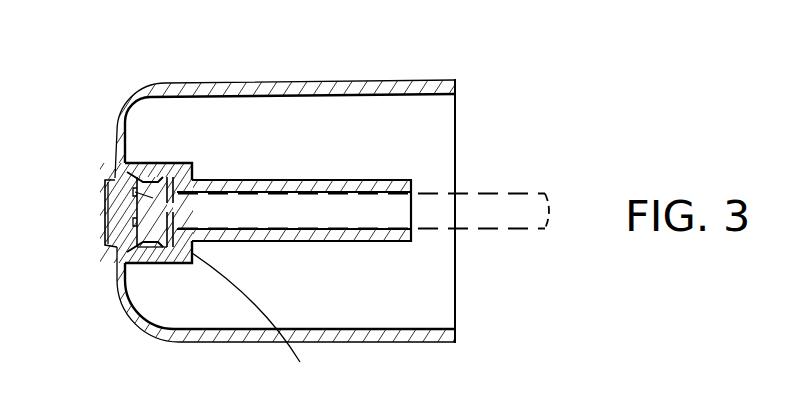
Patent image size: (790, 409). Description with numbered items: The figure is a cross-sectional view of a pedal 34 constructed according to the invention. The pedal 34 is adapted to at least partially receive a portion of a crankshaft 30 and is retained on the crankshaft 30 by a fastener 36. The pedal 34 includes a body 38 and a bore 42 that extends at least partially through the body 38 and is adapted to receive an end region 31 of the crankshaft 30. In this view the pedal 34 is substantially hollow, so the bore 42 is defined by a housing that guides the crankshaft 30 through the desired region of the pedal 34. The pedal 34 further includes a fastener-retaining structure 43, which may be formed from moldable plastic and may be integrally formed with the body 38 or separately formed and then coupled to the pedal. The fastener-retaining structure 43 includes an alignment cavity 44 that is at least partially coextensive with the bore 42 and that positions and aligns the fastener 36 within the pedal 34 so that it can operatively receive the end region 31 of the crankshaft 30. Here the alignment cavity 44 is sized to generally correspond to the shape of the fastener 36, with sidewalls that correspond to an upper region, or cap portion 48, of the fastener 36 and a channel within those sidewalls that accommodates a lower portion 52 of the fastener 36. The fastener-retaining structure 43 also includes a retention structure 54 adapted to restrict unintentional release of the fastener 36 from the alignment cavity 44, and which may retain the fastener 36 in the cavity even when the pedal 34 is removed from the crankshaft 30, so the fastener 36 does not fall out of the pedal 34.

The crankshaft 30 is at (526, 183).
The end region 31 is at (467, 200).
The pedal 34 is at (116, 101).
The fastener 36 is at (115, 182).
The body 38 is at (406, 107).
The bore 42 is at (360, 218).
The fastener-retaining structure 43 is at (166, 164).
The alignment cavity 44 is at (138, 256).
The cap portion 48 is at (118, 164).
The lower portion 52 is at (257, 325).
The retention structure 54 is at (133, 218).